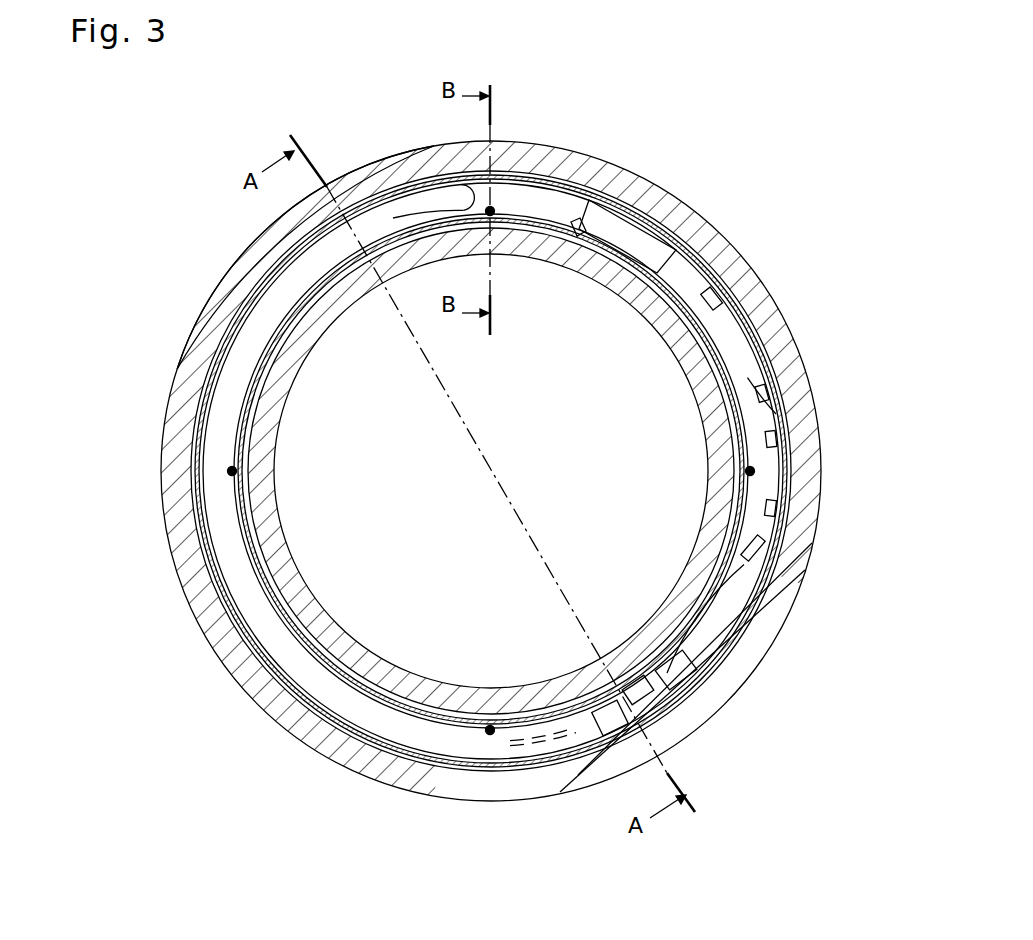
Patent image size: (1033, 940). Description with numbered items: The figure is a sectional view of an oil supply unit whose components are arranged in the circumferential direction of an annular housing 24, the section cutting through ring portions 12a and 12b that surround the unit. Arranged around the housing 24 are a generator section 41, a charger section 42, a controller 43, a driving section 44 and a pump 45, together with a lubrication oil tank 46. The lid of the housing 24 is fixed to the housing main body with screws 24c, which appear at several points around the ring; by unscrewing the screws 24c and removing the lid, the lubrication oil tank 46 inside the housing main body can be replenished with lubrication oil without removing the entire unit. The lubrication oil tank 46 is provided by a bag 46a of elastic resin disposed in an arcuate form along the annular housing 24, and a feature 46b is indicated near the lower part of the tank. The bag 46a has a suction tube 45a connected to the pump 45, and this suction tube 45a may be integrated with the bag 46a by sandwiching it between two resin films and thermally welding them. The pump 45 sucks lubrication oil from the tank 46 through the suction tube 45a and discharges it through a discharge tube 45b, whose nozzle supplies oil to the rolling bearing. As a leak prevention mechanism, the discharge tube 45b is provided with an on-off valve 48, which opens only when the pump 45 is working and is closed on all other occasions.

The inner ring portion of lens barrel 12a is at (340, 297).
The outer ring portion of lens barrel 12b is at (386, 182).
The annular housing 24 is at (539, 184).
The screws 24c is at (240, 478).
The generator section 41 is at (656, 206).
The charger section 42 is at (755, 330).
The controller 43 is at (794, 492).
The driving section 44 is at (734, 599).
The pump 45 is at (699, 657).
The suction tube 45a is at (642, 726).
The discharge tube 45b is at (660, 660).
The lubrication oil tank 46 is at (253, 326).
The bag 46a is at (215, 405).
The hidden projection 46b is at (586, 742).
The on-off valve 48 is at (625, 678).